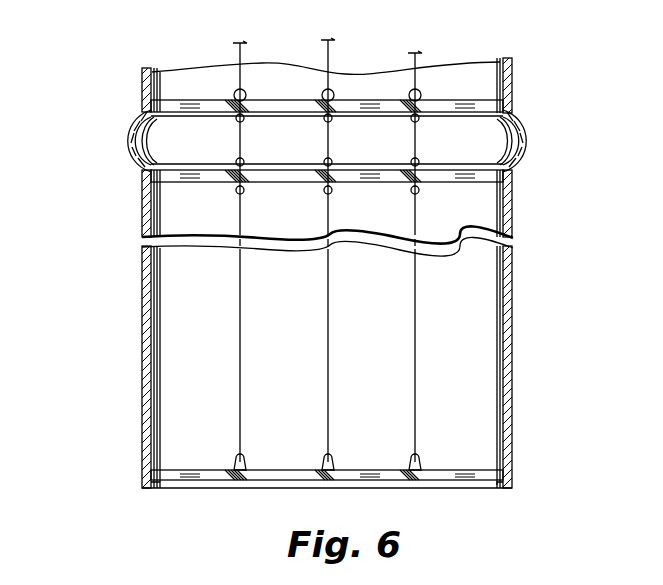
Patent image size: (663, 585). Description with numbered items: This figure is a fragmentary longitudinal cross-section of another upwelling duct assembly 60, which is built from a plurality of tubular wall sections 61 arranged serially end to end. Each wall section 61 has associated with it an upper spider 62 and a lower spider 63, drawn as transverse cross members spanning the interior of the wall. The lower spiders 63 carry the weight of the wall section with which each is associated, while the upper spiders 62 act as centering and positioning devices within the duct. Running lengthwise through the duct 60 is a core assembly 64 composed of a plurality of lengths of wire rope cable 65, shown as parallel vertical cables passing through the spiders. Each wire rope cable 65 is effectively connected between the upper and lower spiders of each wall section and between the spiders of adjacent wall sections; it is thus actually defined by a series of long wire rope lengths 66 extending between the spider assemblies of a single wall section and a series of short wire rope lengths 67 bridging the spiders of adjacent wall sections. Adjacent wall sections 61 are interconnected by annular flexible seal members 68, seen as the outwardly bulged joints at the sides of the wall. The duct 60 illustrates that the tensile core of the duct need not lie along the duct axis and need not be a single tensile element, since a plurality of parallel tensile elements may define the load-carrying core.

The upwelling duct assembly 60 is at (120, 194).
The tubular wall section 61 is at (516, 80).
The upper spider 62 is at (483, 200).
The lower spider 63 is at (390, 68).
The core assembly 64 is at (182, 311).
The wire rope cable 65 is at (417, 398).
The long wire rope length 66 is at (417, 288).
The short wire rope length 67 is at (417, 141).
The annular flexible seal member 68 is at (531, 141).